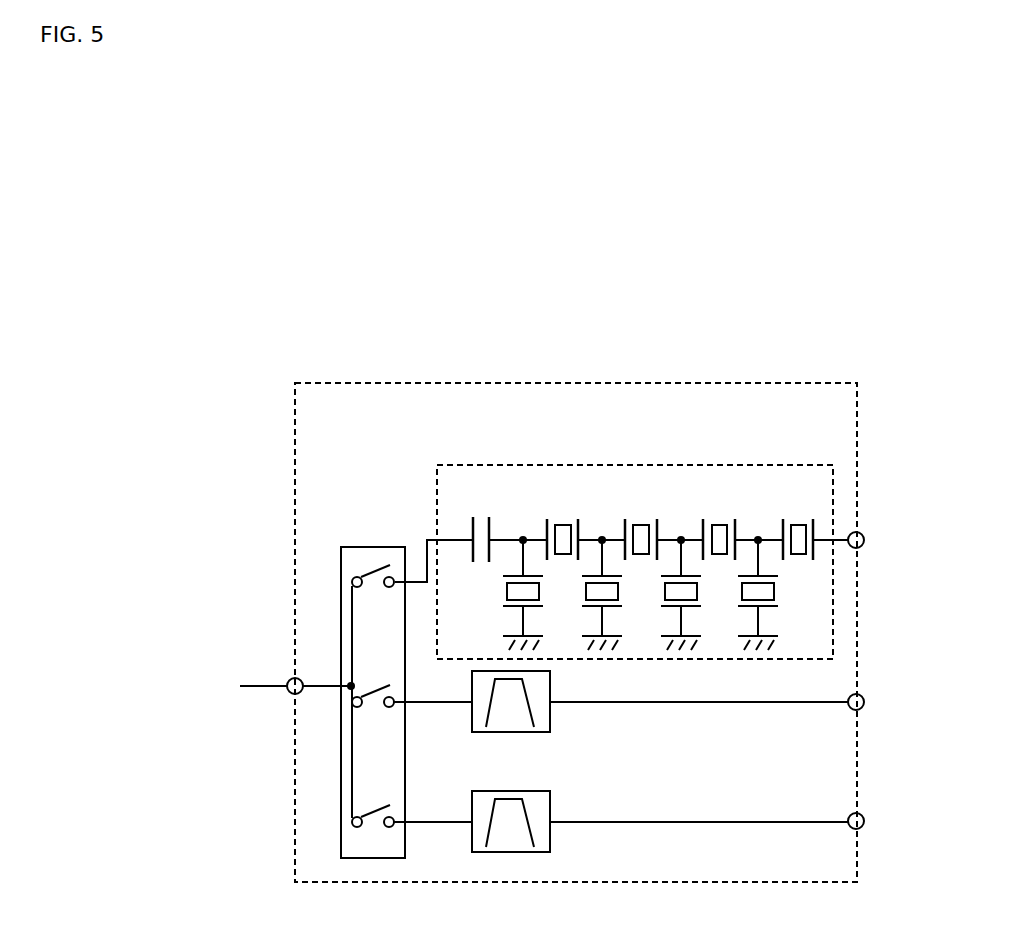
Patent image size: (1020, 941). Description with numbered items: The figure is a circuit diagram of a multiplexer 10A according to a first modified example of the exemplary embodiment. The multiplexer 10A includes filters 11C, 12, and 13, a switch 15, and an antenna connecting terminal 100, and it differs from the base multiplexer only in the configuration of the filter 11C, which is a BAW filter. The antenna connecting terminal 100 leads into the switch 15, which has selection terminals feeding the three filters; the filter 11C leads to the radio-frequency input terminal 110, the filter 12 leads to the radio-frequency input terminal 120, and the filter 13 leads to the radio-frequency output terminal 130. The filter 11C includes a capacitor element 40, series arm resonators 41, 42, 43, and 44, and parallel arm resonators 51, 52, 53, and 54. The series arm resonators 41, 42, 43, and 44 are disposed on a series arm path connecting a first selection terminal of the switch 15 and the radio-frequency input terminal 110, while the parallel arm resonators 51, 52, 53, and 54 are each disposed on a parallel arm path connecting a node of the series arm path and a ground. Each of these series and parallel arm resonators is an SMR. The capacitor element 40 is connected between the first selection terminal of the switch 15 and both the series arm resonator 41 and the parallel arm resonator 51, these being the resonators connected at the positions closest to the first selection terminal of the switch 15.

The multiplexer 10A is at (782, 383).
The filter 11C is at (762, 466).
The switch 15 is at (365, 546).
The capacitor element 40 is at (478, 515).
The series arm resonator 41 is at (557, 516).
The series arm resonator 42 is at (638, 516).
The series arm resonator 43 is at (715, 516).
The series arm resonator 44 is at (788, 516).
The parallel arm resonator 51 is at (506, 596).
The parallel arm resonator 52 is at (585, 596).
The parallel arm resonator 53 is at (664, 596).
The parallel arm resonator 54 is at (741, 596).
The filter 12 is at (550, 712).
The filter 13 is at (550, 832).
The antenna connecting terminal 100 is at (289, 694).
The radio-frequency input terminal 110 is at (862, 533).
The radio-frequency input terminal 120 is at (862, 695).
The radio-frequency output terminal 130 is at (862, 814).